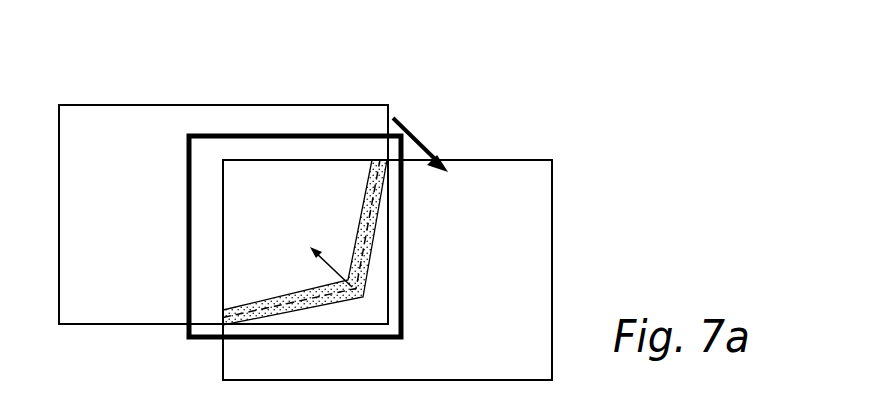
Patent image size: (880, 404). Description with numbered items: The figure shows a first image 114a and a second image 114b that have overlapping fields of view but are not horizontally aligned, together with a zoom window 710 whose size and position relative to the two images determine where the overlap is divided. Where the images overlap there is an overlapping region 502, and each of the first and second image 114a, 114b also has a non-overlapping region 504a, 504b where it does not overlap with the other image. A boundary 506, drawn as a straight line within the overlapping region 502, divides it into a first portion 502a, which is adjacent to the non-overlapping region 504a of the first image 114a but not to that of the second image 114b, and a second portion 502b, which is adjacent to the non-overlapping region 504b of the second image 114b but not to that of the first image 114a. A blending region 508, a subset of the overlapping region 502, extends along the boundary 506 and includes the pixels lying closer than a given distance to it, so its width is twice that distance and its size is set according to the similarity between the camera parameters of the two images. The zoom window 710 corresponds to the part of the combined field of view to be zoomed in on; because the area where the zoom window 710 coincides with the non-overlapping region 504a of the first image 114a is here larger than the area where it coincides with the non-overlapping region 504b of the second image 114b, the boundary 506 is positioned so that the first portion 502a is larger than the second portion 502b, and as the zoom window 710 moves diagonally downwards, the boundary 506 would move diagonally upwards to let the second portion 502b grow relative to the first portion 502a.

The first image 114a is at (183, 105).
The second image 114b is at (502, 158).
The non-overlapping region 504a is at (216, 172).
The non-overlapping region 504b is at (423, 226).
The zoom window 710 is at (303, 133).
The first portion 502a is at (228, 172).
The second portion 502b is at (423, 226).
The overlapping region 502 is at (334, 202).
The boundary 506 is at (362, 242).
The blending region 508 is at (378, 218).